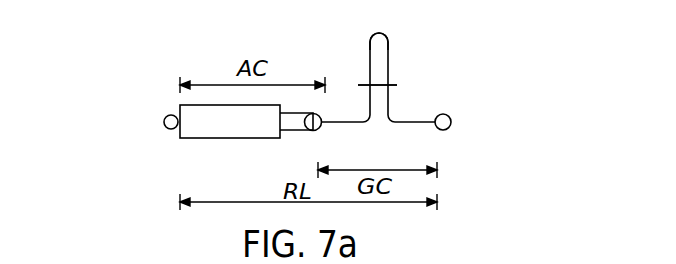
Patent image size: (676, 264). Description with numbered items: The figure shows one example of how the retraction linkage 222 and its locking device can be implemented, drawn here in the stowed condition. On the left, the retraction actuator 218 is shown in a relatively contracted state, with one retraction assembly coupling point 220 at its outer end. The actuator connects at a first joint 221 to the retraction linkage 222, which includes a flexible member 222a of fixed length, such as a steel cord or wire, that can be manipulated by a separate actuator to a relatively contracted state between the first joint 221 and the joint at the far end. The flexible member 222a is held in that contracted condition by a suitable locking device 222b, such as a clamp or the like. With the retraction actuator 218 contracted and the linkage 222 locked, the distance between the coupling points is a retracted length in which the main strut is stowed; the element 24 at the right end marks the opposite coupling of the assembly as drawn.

The valve / port connector 24 is at (451, 126).
The retraction actuator 218 is at (232, 138).
The retraction assembly coupling point 220 is at (163, 121).
The first joint 221 is at (322, 127).
The retraction linkage 222 is at (360, 47).
The flexible member 222a is at (388, 41).
The locking device 222b is at (391, 84).